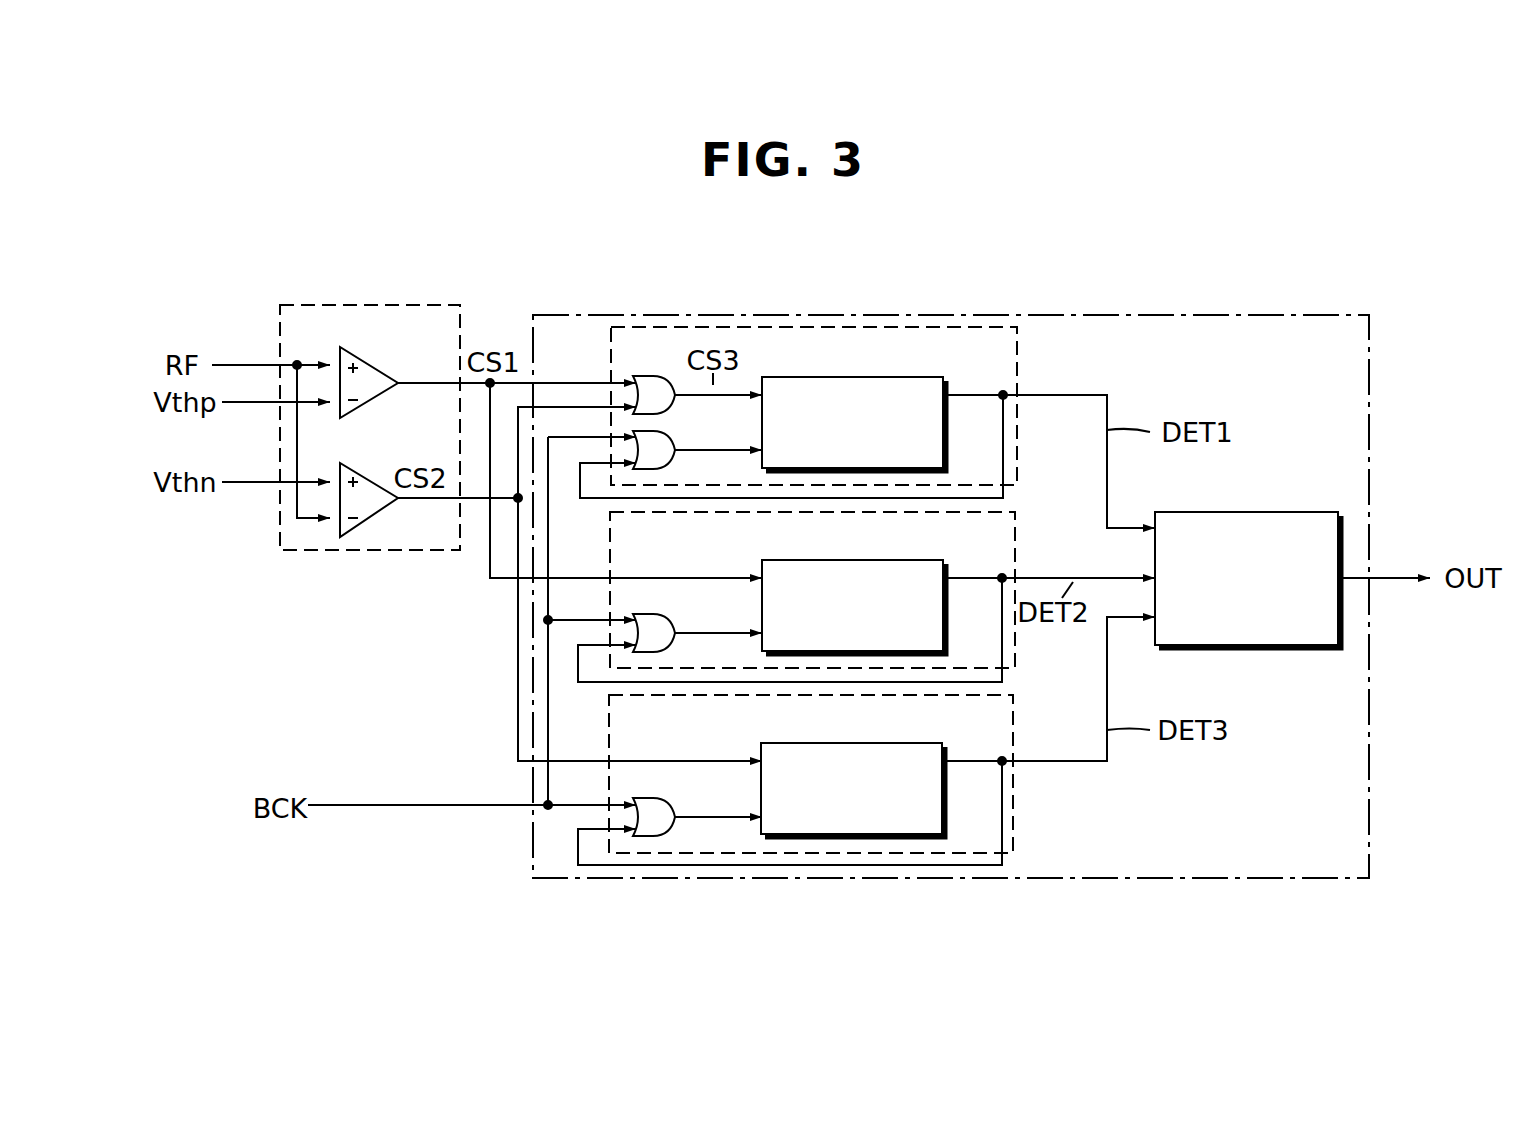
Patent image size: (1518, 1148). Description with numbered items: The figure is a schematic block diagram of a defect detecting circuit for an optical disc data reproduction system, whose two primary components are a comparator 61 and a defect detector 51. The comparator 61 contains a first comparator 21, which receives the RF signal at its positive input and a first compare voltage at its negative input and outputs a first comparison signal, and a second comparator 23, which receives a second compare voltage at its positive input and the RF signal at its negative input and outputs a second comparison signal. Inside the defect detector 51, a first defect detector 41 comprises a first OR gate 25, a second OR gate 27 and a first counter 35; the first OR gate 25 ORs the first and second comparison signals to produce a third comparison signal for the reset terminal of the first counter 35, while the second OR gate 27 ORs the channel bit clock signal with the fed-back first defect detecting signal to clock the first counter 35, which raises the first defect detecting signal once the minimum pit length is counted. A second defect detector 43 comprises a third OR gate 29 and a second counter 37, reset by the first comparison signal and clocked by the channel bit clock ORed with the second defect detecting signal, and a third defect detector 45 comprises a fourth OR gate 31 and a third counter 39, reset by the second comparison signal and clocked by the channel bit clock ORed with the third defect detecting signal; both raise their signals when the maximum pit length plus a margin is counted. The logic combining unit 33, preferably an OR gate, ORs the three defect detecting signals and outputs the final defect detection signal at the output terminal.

The first comparator 21 is at (372, 362).
The second comparator 23 is at (358, 477).
The first OR gate 25 is at (648, 375).
The second OR gate 27 is at (672, 438).
The third OR gate 29 is at (672, 618).
The fourth OR gate 31 is at (668, 801).
The logic combining unit 33 is at (1277, 650).
The first counter 35 is at (818, 377).
The second counter 37 is at (812, 560).
The third counter 39 is at (810, 743).
The first defect detector 41 is at (1017, 372).
The second defect detector 43 is at (1015, 553).
The third defect detector 45 is at (1015, 728).
The defect detector 51 is at (1369, 437).
The comparator 61 is at (358, 303).